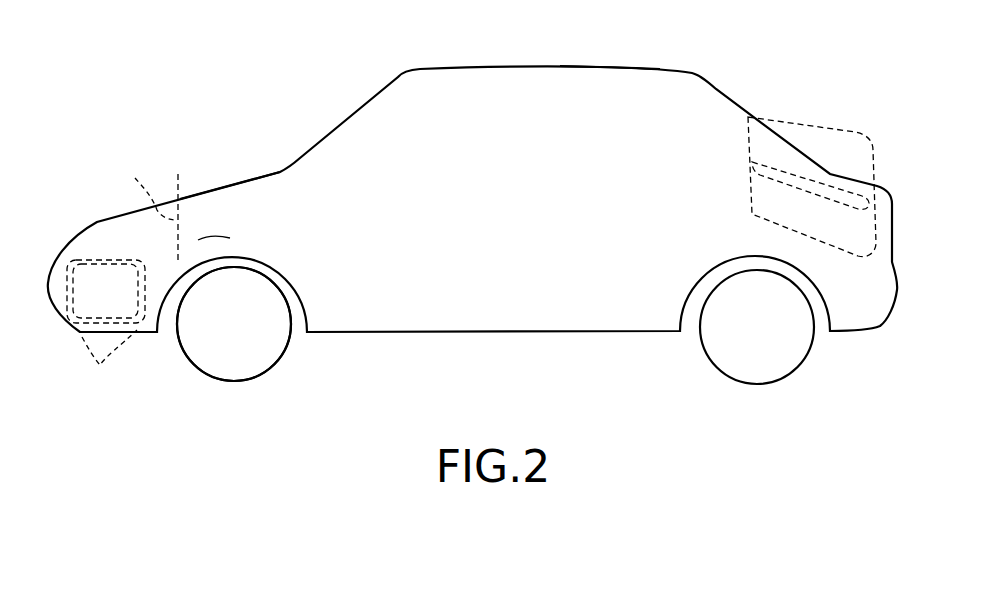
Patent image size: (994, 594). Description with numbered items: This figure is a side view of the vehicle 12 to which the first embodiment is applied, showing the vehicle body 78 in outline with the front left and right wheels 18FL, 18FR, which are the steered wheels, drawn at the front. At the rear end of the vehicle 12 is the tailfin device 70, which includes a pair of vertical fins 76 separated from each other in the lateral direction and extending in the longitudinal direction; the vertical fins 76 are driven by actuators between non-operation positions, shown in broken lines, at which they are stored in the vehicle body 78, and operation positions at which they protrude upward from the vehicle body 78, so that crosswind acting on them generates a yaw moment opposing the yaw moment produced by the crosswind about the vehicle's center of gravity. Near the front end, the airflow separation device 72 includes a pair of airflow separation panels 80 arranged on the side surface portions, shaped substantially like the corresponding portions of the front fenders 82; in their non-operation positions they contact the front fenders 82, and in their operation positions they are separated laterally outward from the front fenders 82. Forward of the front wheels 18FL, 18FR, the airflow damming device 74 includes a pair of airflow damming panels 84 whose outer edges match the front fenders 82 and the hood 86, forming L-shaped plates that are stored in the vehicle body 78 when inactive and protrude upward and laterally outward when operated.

The vehicle 12 is at (379, 75).
The front left wheel 18FL is at (237, 382).
The front right wheel 18FR is at (283, 357).
The tailfin device 70 is at (846, 119).
The airflow separation device 72 is at (92, 259).
The airflow damming device 74 is at (166, 170).
The vertical fins 76 is at (748, 180).
The vehicle body 78 is at (609, 67).
The airflow separation panels 80 is at (109, 363).
The front fenders 82 is at (230, 238).
The airflow damming panels 84 is at (173, 185).
The hood 86 is at (231, 183).